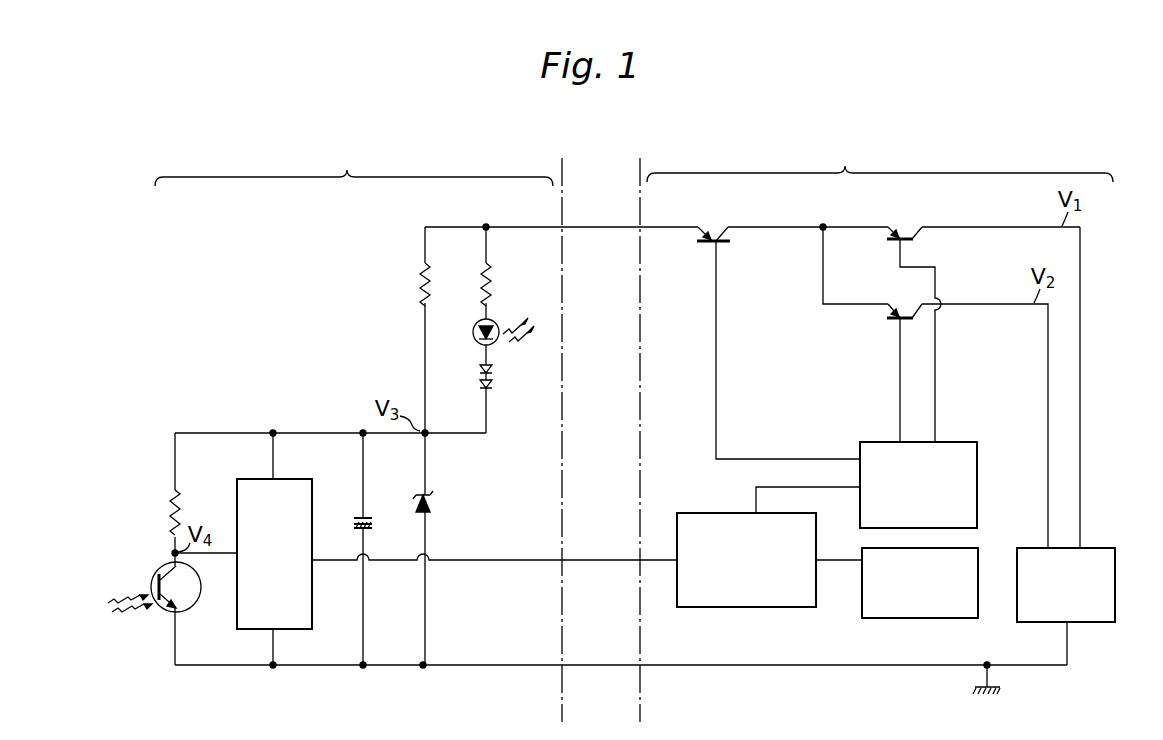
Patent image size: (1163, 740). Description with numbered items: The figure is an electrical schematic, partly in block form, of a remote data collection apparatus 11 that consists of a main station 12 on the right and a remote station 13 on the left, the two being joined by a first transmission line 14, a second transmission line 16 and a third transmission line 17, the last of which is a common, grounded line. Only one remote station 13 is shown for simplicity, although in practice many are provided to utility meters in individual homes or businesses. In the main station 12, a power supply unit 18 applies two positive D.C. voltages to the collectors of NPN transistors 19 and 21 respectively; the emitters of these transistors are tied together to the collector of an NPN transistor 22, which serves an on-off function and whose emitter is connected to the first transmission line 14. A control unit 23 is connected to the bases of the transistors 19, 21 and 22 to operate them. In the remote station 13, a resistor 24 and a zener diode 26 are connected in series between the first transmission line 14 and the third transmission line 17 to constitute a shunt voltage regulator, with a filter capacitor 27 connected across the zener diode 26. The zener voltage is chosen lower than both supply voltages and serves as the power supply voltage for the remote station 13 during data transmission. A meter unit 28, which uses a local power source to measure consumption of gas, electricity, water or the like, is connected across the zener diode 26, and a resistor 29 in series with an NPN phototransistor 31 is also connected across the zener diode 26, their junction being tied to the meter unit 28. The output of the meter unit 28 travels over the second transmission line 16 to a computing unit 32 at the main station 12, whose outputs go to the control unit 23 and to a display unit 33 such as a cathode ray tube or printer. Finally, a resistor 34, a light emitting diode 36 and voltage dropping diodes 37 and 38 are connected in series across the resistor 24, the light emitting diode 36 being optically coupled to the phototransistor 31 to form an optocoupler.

The remote data collection apparatus 11 is at (605, 150).
The main station 12 is at (880, 161).
The remote station 13 is at (354, 164).
The first transmission line 14 is at (590, 226).
The second transmission line 16 is at (594, 559).
The third transmission line 17 is at (594, 664).
The power supply unit 18 is at (1106, 548).
The NPN transistor 19 is at (914, 233).
The NPN transistor 21 is at (892, 322).
The NPN transistor 22 is at (724, 243).
The control unit 23 is at (980, 466).
The resistor 24 is at (420, 277).
The zener diode 26 is at (433, 496).
The filter capacitor 27 is at (375, 519).
The meter unit 28 is at (294, 479).
The resistor 29 is at (172, 501).
The NPN phototransistor 31 is at (158, 570).
The computing unit 32 is at (703, 512).
The display unit 33 is at (980, 558).
The resistor 34 is at (491, 277).
The light emitting diode 36 is at (473, 332).
The voltage dropping diode 37 is at (496, 370).
The voltage dropping diode 38 is at (497, 386).